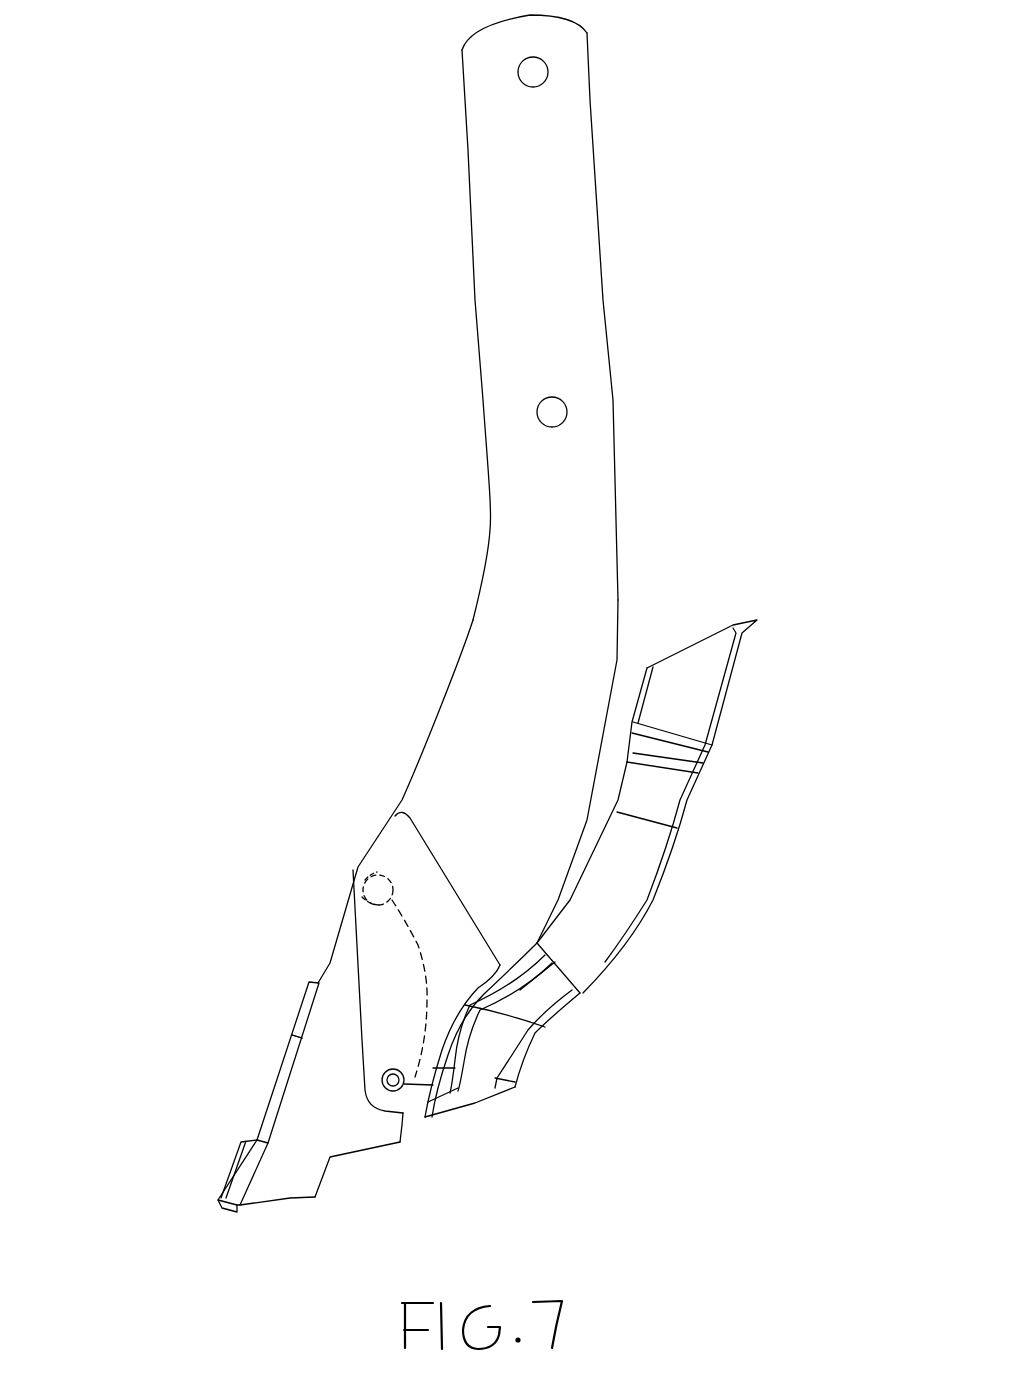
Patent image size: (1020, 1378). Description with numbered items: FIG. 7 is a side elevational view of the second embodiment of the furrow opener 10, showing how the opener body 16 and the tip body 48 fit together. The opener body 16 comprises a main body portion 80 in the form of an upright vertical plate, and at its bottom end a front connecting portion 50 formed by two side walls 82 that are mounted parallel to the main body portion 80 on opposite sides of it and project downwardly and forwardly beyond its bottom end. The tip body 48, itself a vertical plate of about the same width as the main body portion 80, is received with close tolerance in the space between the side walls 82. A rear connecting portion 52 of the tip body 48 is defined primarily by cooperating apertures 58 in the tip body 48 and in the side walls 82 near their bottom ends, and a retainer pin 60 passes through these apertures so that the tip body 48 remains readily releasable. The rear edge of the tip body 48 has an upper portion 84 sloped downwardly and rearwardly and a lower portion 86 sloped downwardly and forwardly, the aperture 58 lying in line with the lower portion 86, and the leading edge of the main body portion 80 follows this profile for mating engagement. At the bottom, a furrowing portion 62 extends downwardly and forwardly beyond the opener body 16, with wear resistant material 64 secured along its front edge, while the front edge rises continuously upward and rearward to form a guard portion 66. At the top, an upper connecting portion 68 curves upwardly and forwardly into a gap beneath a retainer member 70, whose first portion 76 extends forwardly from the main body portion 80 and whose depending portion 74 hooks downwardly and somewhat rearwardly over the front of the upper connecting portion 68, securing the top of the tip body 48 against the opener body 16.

The furrow opener 10 is at (85, 370).
The opener body 16 is at (503, 562).
The tip body 48 is at (305, 1102).
The front connecting portion 50 is at (430, 947).
The rear connecting portion 52 is at (414, 1128).
The cooperating apertures 58 is at (517, 1087).
The retainer pin 60 is at (397, 1070).
The furrowing portion 62 is at (270, 1192).
The wear resistant material 64 is at (262, 1115).
The guard portion 66 is at (304, 1064).
The upper connecting portion 68 is at (392, 905).
The retainer member 70 is at (315, 868).
The depending portion 74 is at (380, 873).
The first portion 76 is at (373, 903).
The main body portion 80 is at (490, 757).
The side walls 82 is at (411, 849).
The upper portion 84 is at (412, 913).
The lower portion 86 is at (420, 1010).